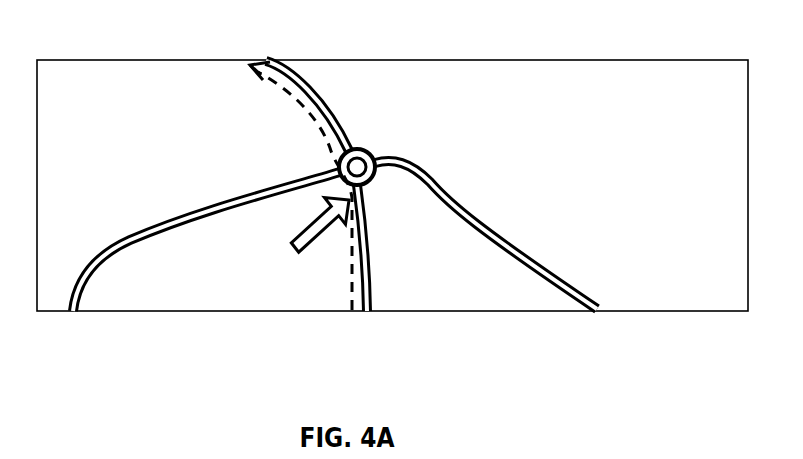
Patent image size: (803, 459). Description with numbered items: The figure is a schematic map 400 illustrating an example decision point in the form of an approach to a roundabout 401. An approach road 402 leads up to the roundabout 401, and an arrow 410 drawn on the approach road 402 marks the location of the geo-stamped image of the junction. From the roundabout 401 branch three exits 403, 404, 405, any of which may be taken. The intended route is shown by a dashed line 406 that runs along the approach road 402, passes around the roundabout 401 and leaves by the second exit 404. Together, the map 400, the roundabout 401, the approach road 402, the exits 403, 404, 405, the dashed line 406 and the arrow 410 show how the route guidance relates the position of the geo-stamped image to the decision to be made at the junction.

The map 400 is at (104, 60).
The roundabout 401 is at (373, 152).
The approach road 402 is at (372, 255).
The exit 403 is at (274, 193).
The exit 404 is at (330, 102).
The exit 405 is at (400, 168).
The dashed line 406 is at (290, 90).
The arrow 410 is at (330, 231).